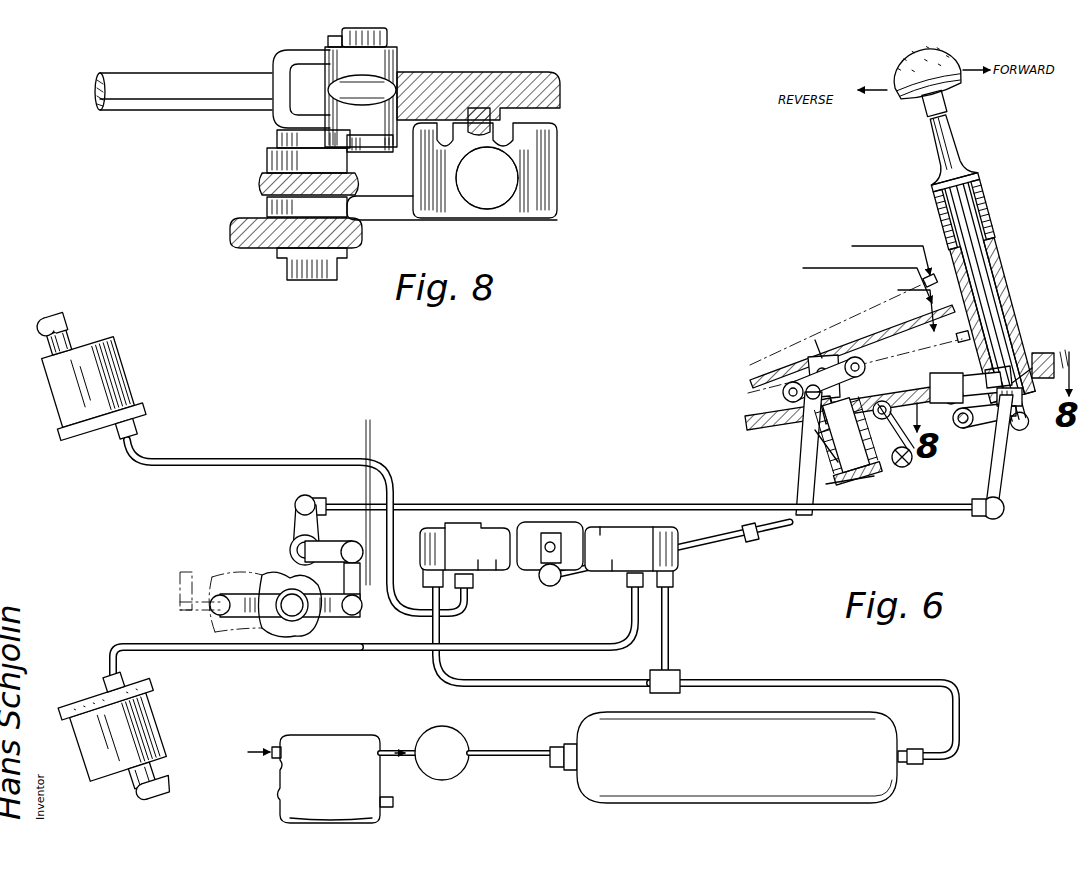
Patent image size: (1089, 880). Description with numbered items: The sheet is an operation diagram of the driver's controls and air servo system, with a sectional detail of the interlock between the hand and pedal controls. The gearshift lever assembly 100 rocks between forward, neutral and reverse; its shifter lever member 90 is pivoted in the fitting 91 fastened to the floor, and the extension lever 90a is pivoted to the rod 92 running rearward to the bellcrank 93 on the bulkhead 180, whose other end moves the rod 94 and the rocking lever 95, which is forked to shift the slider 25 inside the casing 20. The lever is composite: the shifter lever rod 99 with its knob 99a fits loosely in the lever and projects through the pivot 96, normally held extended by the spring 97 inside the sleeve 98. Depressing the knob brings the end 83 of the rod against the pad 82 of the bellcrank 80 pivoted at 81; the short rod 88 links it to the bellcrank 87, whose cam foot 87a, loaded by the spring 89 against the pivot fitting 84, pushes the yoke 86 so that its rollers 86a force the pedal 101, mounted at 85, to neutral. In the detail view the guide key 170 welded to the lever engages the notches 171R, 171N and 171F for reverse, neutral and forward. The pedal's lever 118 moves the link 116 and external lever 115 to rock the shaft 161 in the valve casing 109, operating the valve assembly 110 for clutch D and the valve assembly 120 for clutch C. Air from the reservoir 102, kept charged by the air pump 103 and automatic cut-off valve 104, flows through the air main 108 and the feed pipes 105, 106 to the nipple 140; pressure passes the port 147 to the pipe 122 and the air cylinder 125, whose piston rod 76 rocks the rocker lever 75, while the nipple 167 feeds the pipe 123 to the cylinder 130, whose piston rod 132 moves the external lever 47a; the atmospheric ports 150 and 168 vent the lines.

In FIG. 6, the casing 20 is at (288, 584).
In FIG. 6, the bridging slider 25 is at (180, 578).
In FIG. 6, the external lever 47a is at (165, 800).
In FIG. 6, the rocker lever 75 is at (70, 318).
In FIG. 6, the piston rod 76 is at (80, 326).
In FIG. 8, the bellcrank 80 is at (382, 203).
In FIG. 6, the bellcrank 80 is at (990, 392).
In FIG. 8, the pivot 81 is at (300, 264).
In FIG. 6, the pivot 81 is at (974, 422).
In FIG. 8, the pad 82 is at (541, 163).
In FIG. 6, the pad 82 is at (1020, 396).
In FIG. 8, the end of rod 83 is at (514, 215).
In FIG. 6, the end of rod 83 is at (1002, 373).
In FIG. 6, the pivot fitting 84 is at (860, 395).
In FIG. 6, the pedal pivot 85 is at (826, 362).
In FIG. 6, the yoke 86 is at (806, 430).
In FIG. 6, the roller 86a is at (866, 368).
In FIG. 6, the bellcrank 87 is at (870, 455).
In FIG. 6, the cam foot 87a is at (858, 482).
In FIG. 8, the short rod 88 is at (258, 228).
In FIG. 6, the short rod 88 is at (970, 426).
In FIG. 6, the spring 89 is at (825, 456).
In FIG. 6, the shifter lever member 90 is at (982, 286).
In FIG. 8, the extension lever 90a is at (490, 78).
In FIG. 6, the extension lever 90a is at (1000, 462).
In FIG. 6, the fitting 91 is at (1026, 380).
In FIG. 8, the rod 92 is at (152, 82).
In FIG. 6, the rod 92 is at (928, 515).
In FIG. 6, the bellcrank 93 is at (300, 530).
In FIG. 6, the rod 94 is at (344, 580).
In FIG. 6, the rocking lever 95 is at (333, 617).
In FIG. 6, the pivot 96 is at (986, 312).
In FIG. 6, the spring 97 is at (968, 202).
In FIG. 6, the sleeve 98 is at (967, 180).
In FIG. 6, the shifter lever rod 99 is at (952, 130).
In FIG. 6, the knob 99a is at (950, 53).
In FIG. 6, the gearshift lever assembly 100 is at (992, 255).
In FIG. 6, the pedal 101 is at (872, 342).
In FIG. 6, the reservoir 102 is at (585, 736).
In FIG. 6, the air pump 103 is at (347, 725).
In FIG. 6, the automatic cut-off valve 104 is at (452, 733).
In FIG. 6, the air pressure feed pipe 105 is at (432, 664).
In FIG. 6, the air pressure feed pipe 106 is at (672, 644).
In FIG. 6, the air main 108 is at (804, 684).
In FIG. 6, the valve casing 109 is at (552, 522).
In FIG. 6, the valve assembly 110 is at (462, 526).
In FIG. 6, the external lever 115 is at (542, 546).
In FIG. 6, the link 116 is at (705, 545).
In FIG. 6, the lever 118 is at (800, 460).
In FIG. 6, the valve assembly 120 is at (642, 526).
In FIG. 6, the pipe 122 is at (388, 472).
In FIG. 6, the pipe 123 is at (272, 653).
In FIG. 6, the air cylinder 125 is at (110, 372).
In FIG. 6, the cylinder 130 is at (140, 712).
In FIG. 6, the piston rod 132 is at (143, 788).
In FIG. 6, the nipple 140 is at (424, 580).
In FIG. 6, the port 147 is at (474, 584).
In FIG. 6, the atmospheric port 150 is at (546, 586).
In FIG. 6, the shaft 161 is at (556, 546).
In FIG. 6, the nipple 167 is at (628, 612).
In FIG. 6, the atmospheric port 168 is at (630, 588).
In FIG. 8, the guide key 170 is at (495, 118).
In FIG. 6, the guide key 170 is at (1013, 414).
In FIG. 8, the notch 171F is at (440, 150).
In FIG. 8, the notch 171N is at (487, 178).
In FIG. 8, the notch 171R is at (518, 160).
In FIG. 6, the bulkhead 180 is at (364, 428).